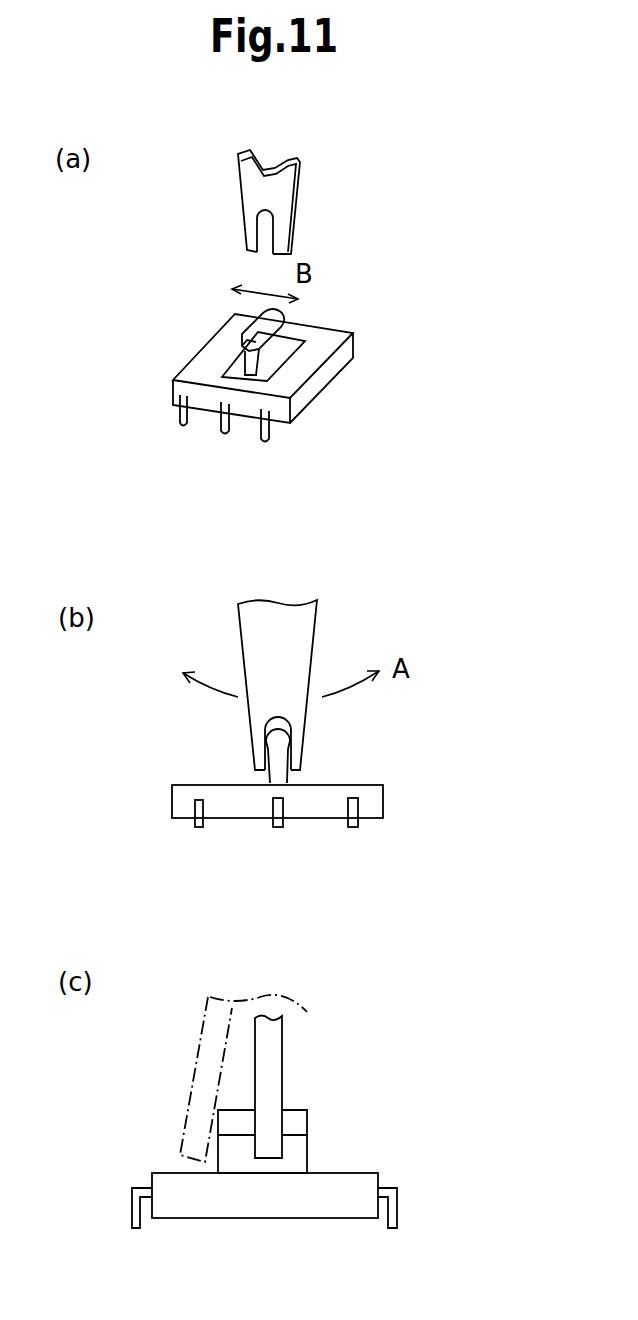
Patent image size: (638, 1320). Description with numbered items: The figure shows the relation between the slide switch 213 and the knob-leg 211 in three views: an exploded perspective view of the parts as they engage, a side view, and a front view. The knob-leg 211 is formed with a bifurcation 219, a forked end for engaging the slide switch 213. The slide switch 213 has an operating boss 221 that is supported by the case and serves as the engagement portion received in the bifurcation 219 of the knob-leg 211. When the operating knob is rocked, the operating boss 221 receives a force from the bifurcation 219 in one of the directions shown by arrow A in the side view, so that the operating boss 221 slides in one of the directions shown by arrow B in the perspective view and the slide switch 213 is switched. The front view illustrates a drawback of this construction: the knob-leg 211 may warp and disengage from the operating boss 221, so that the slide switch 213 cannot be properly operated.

The knob-leg 211 is at (300, 188).
The bifurcation 219 is at (257, 228).
The operating boss 221 is at (235, 320).
The slide switch 213 is at (355, 333).